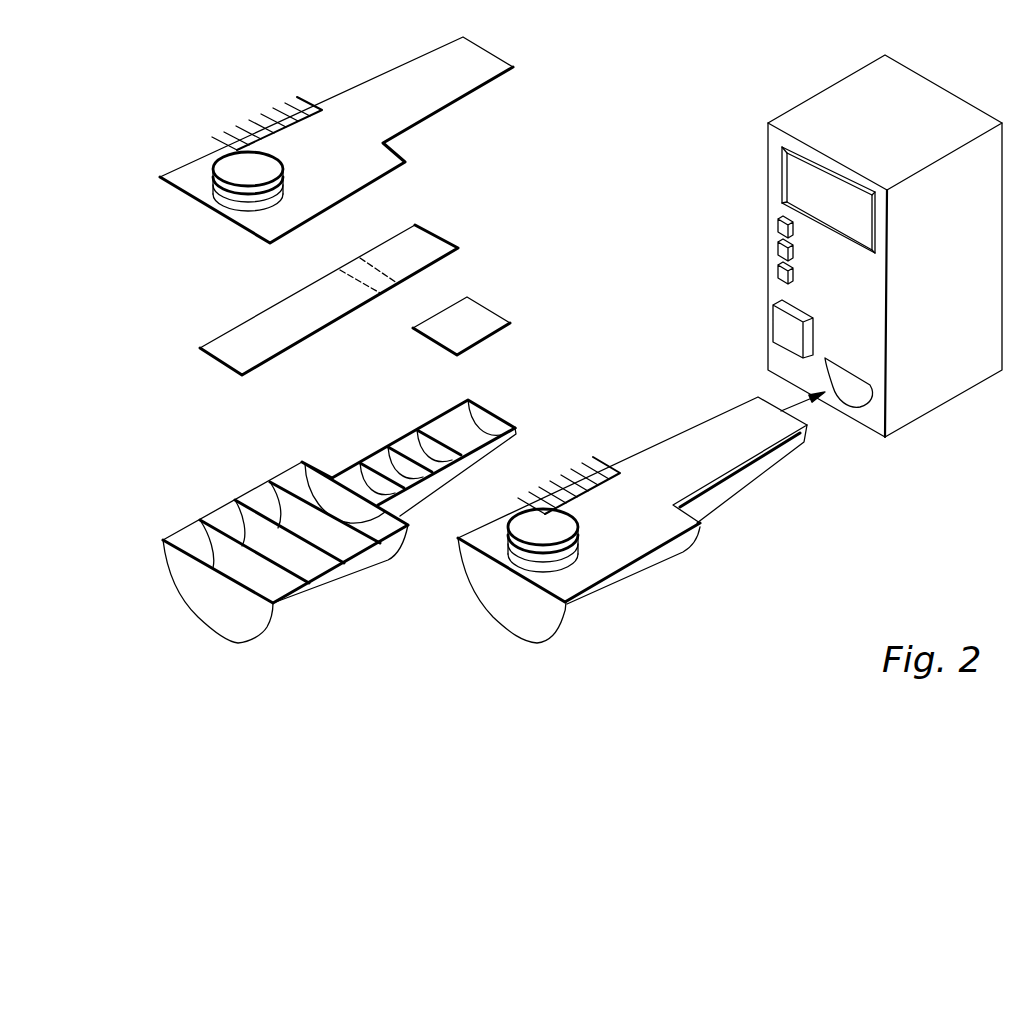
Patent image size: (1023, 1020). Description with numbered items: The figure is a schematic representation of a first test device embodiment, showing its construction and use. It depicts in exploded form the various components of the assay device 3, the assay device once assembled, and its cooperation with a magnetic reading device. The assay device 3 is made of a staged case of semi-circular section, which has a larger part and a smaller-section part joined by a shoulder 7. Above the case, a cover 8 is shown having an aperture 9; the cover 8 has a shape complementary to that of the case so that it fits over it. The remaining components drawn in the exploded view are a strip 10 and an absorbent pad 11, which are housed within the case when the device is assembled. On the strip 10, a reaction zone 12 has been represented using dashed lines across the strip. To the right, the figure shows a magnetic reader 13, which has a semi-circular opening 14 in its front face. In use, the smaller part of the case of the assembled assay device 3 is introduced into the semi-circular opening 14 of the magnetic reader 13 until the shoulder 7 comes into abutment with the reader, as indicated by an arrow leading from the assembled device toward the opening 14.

The assay device 3 is at (632, 540).
The shoulder 7 is at (320, 452).
The cover 8 is at (200, 190).
The aperture 9 is at (242, 172).
The strip 10 is at (321, 300).
The absorbent pad 11 is at (443, 330).
The reaction zone 12 is at (368, 278).
The magnetic reader 13 is at (885, 268).
The semi-circular opening 14 is at (845, 395).